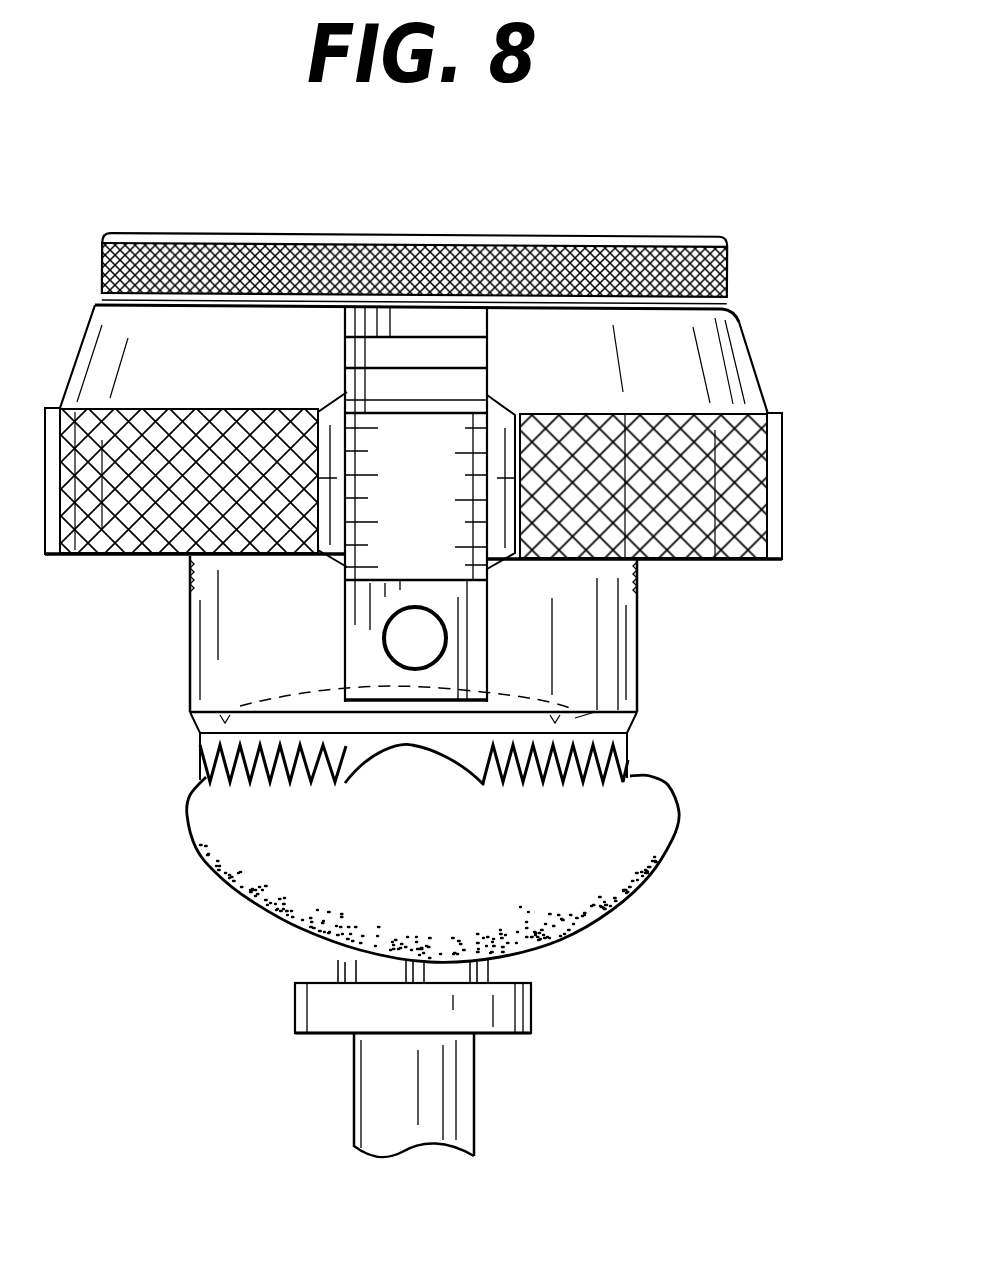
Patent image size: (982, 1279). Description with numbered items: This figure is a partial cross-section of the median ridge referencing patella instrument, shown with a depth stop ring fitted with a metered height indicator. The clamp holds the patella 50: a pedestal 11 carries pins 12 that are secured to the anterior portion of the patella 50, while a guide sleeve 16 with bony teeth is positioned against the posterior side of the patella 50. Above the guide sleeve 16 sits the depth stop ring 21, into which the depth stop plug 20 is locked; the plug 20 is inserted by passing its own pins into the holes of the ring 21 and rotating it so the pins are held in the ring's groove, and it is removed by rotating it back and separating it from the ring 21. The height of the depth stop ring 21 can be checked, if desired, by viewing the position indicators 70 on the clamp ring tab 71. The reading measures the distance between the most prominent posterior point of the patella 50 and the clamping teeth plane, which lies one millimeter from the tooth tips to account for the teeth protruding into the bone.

The pedestal 11 is at (352, 1067).
The pins 12 is at (298, 940).
The guide sleeve 16 is at (637, 655).
The depth stop plug 20 is at (729, 262).
The depth stop ring 21 is at (770, 512).
The patella 50 is at (680, 845).
The position indicators 70 is at (370, 565).
The clamp ring tab 71 is at (490, 347).